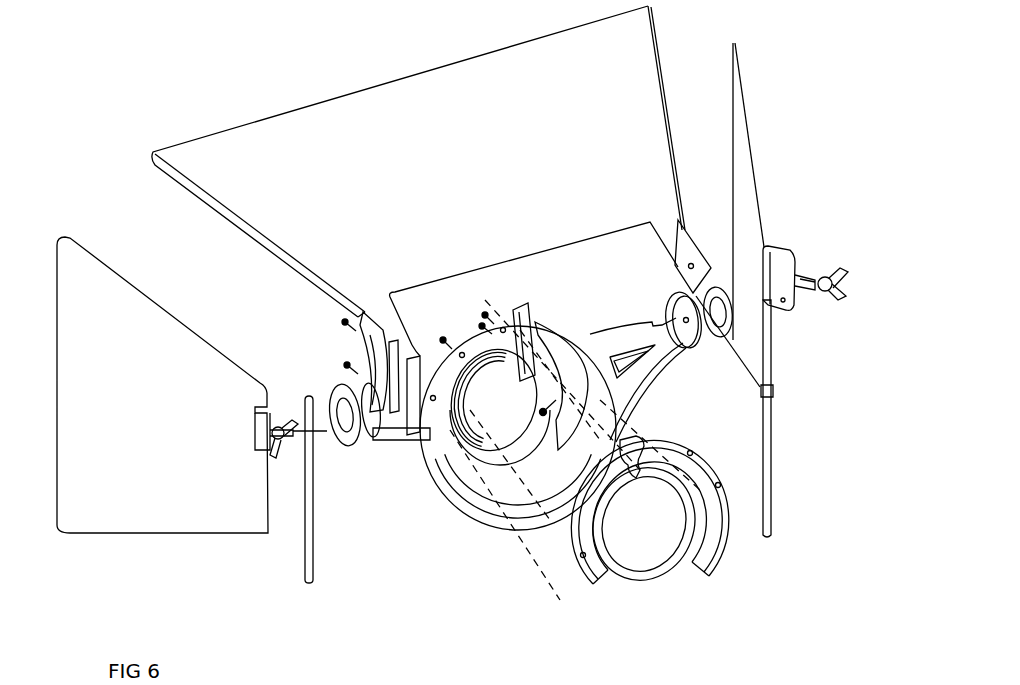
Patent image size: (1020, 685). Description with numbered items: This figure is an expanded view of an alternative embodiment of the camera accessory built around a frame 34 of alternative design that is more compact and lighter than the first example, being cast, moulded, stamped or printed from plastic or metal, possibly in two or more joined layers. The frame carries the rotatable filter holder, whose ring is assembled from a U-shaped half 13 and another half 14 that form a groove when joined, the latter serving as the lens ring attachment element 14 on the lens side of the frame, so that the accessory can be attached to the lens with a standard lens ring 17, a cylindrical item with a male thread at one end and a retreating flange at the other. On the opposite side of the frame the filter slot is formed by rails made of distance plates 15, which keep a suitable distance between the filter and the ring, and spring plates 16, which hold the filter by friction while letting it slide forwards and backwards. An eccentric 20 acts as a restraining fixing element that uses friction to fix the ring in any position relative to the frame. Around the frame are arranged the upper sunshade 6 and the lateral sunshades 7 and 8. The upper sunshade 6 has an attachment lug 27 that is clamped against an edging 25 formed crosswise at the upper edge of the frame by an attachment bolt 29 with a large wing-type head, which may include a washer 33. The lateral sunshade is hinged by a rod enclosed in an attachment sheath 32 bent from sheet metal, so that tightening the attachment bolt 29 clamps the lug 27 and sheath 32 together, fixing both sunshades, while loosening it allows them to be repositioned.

The upper sunshade 6 is at (614, 126).
The lateral sunshade 7 is at (747, 205).
The lateral sunshade 8 is at (202, 515).
The U-shaped half 13 is at (723, 513).
The lens ring attachment element 14 is at (460, 445).
The distance plates 15 is at (408, 428).
The spring plates 16 is at (388, 412).
The lens ring 17 is at (687, 540).
The eccentric 20 is at (628, 468).
The edging 25 is at (690, 335).
The attachment lug 27 is at (362, 344).
The attachment bolt 29 is at (815, 285).
The attachment sheath 32 is at (310, 527).
The washer 33 is at (337, 397).
The frame 34 is at (527, 505).